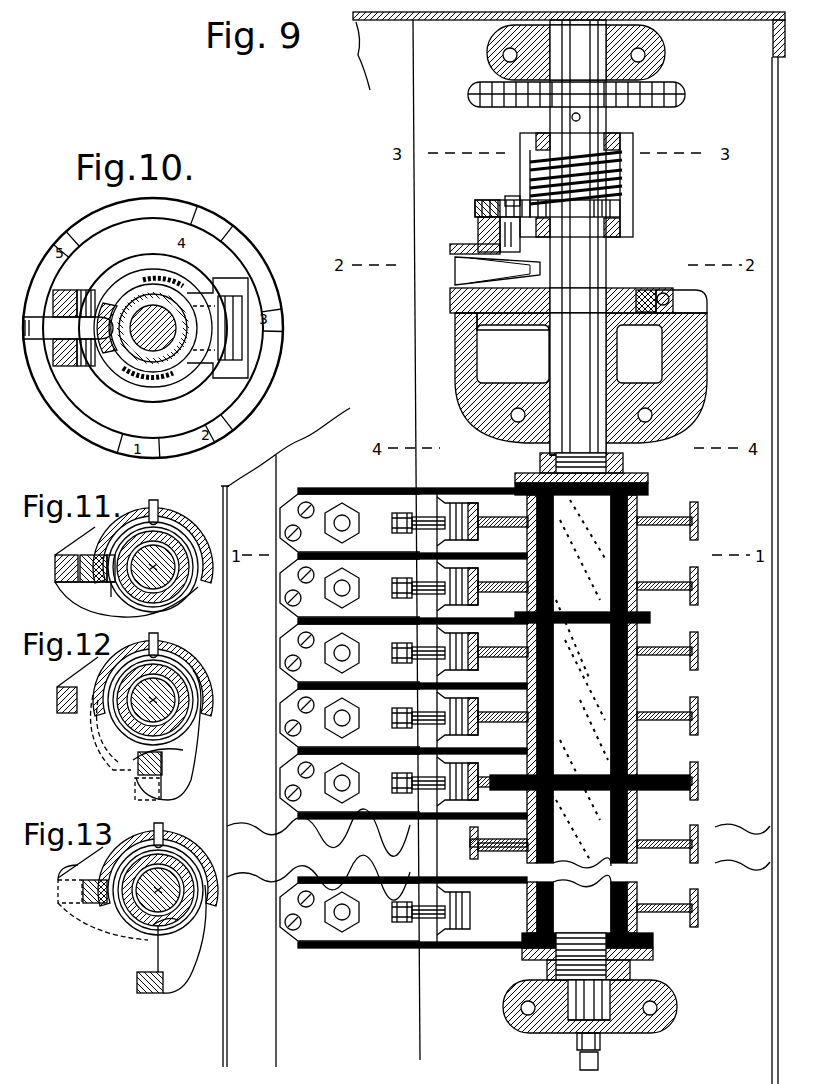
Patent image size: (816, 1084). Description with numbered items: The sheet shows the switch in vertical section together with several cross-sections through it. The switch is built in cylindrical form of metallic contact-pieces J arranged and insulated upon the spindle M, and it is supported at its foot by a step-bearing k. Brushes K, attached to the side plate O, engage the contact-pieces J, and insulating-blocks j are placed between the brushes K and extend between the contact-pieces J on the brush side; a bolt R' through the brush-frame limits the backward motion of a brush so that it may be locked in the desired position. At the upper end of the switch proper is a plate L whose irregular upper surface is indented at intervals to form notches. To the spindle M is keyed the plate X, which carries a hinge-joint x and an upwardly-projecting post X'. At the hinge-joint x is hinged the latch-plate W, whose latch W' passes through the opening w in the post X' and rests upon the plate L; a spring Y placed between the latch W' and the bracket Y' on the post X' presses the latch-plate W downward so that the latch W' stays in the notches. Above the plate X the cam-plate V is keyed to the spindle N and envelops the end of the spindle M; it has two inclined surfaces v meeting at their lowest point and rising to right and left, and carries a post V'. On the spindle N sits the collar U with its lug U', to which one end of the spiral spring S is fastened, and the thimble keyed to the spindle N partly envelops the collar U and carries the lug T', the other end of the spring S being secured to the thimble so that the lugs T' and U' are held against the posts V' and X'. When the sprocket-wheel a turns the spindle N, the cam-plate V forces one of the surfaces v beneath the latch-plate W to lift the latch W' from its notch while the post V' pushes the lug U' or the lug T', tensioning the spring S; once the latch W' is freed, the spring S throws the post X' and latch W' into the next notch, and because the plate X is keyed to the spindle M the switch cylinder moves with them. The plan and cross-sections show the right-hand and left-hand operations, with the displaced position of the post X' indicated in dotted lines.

In FIG. 9, the spindle N is at (560, 42).
In FIG. 10, the spindle N is at (153, 304).
In FIG. 9, the sprocket-wheel a is at (676, 82).
In FIG. 9, the spiral spring S is at (532, 155).
In FIG. 11, the spiral spring S is at (153, 575).
In FIG. 9, the lug T' is at (587, 185).
In FIG. 11, the lug T' is at (128, 541).
In FIG. 12, the lug T' is at (135, 674).
In FIG. 9, the post X' is at (484, 210).
In FIG. 11, the post X' is at (52, 568).
In FIG. 12, the post X' is at (54, 708).
In FIG. 13, the post X' is at (132, 929).
In FIG. 9, the post V' is at (510, 209).
In FIG. 11, the post V' is at (97, 577).
In FIG. 12, the post V' is at (127, 747).
In FIG. 13, the post V' is at (103, 912).
In FIG. 9, the lug U' is at (469, 211).
In FIG. 11, the lug U' is at (74, 597).
In FIG. 12, the lug U' is at (167, 735).
In FIG. 9, the collar U is at (574, 209).
In FIG. 11, the collar U is at (137, 596).
In FIG. 9, the bracket Y' is at (460, 239).
In FIG. 9, the spring Y is at (485, 269).
In FIG. 9, the cam-plate V is at (594, 237).
In FIG. 10, the cam-plate V is at (215, 308).
In FIG. 9, the latch W' is at (546, 298).
In FIG. 10, the latch W' is at (68, 328).
In FIG. 9, the opening w is at (640, 290).
In FIG. 9, the hinge-joint x is at (668, 294).
In FIG. 9, the side plate O is at (460, 318).
In FIG. 10, the side plate O is at (21, 343).
In FIG. 9, the plate X is at (513, 337).
In FIG. 9, the plate L is at (456, 364).
In FIG. 9, the spindle M is at (578, 428).
In FIG. 9, the brushes K is at (458, 500).
In FIG. 9, the insulating-blocks j is at (347, 486).
In FIG. 9, the contact-pieces J is at (699, 652).
In FIG. 9, the bolt R' is at (510, 737).
In FIG. 9, the step-bearing k is at (530, 1035).
In FIG. 10, the inclined surfaces v is at (138, 323).
In FIG. 10, the latch-plate W is at (122, 365).